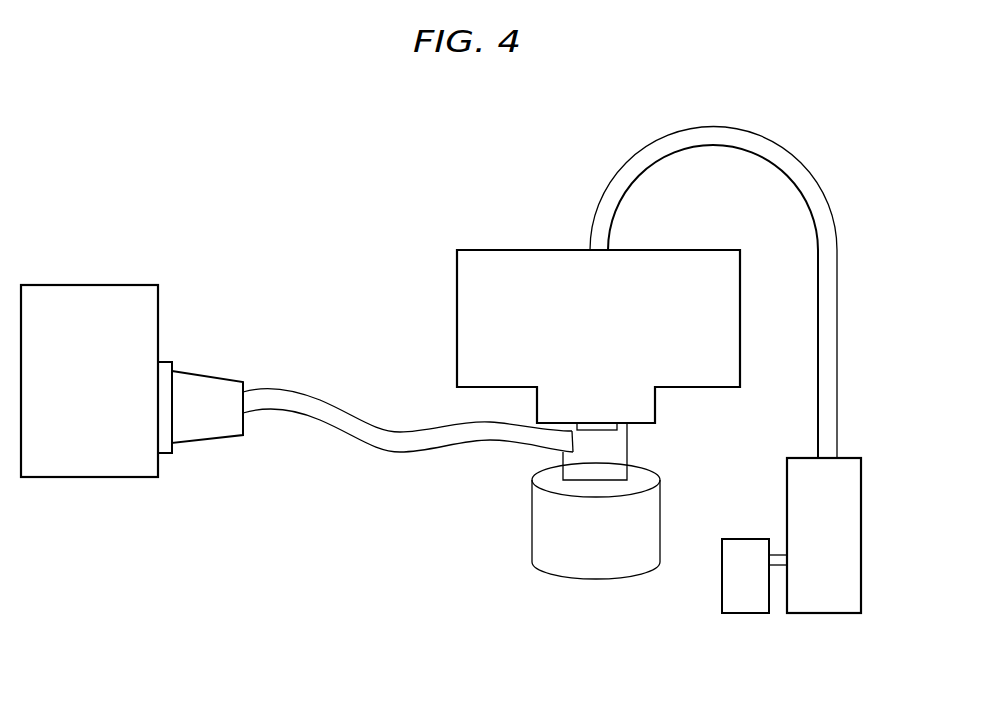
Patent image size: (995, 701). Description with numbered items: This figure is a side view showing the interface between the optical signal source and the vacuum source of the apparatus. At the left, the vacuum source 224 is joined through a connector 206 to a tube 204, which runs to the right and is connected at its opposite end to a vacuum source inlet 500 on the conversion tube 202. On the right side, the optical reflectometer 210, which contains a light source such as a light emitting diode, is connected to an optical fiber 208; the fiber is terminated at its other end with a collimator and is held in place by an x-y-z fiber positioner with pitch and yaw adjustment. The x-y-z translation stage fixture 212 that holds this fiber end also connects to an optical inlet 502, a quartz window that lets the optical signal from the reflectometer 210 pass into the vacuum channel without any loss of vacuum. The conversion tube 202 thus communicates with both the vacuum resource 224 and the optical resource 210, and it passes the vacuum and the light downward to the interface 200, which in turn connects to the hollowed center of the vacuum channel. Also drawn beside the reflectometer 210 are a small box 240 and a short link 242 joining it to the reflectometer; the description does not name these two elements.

The interface 200 is at (530, 523).
The conversion tube 202 is at (628, 452).
The tube 204 is at (392, 432).
The connector 206 is at (200, 444).
The optical fiber 208 is at (705, 128).
The optical reflectometer 210 is at (862, 492).
The x-y-z translation stage fixture 212 is at (508, 249).
The vacuum source 224 is at (82, 284).
The controller 240 is at (747, 614).
The connection line 242 is at (780, 550).
The vacuum source inlet 500 is at (575, 450).
The optical inlet 502 is at (588, 430).